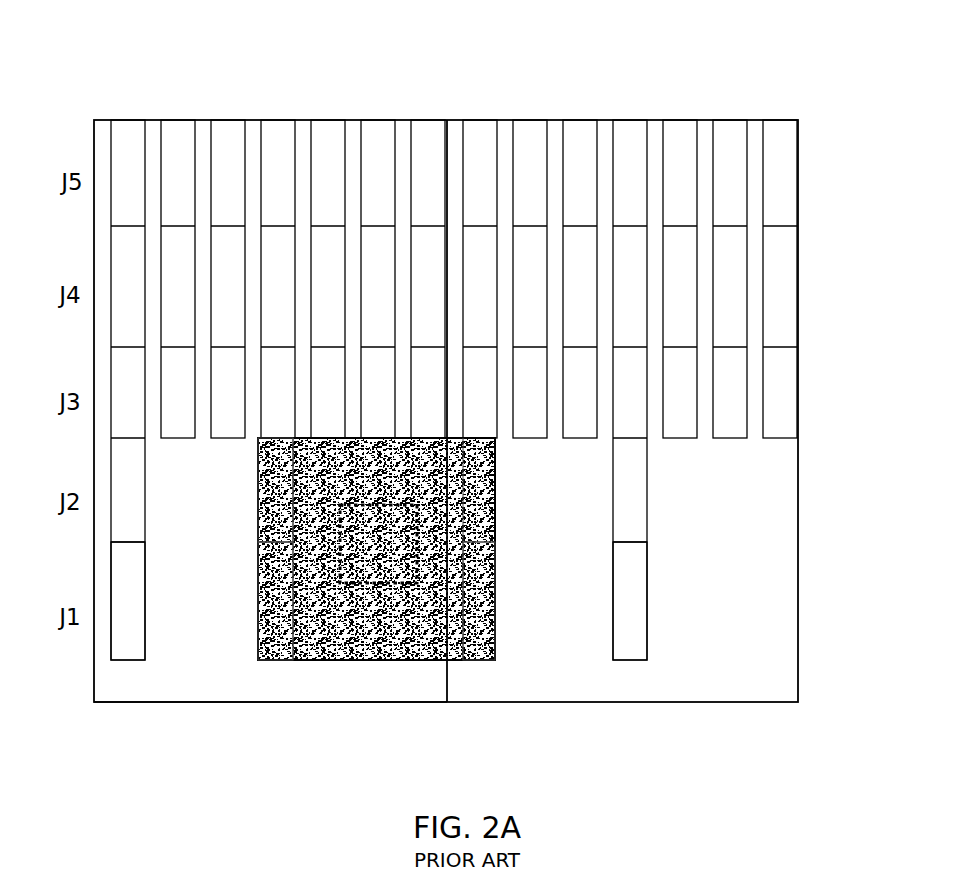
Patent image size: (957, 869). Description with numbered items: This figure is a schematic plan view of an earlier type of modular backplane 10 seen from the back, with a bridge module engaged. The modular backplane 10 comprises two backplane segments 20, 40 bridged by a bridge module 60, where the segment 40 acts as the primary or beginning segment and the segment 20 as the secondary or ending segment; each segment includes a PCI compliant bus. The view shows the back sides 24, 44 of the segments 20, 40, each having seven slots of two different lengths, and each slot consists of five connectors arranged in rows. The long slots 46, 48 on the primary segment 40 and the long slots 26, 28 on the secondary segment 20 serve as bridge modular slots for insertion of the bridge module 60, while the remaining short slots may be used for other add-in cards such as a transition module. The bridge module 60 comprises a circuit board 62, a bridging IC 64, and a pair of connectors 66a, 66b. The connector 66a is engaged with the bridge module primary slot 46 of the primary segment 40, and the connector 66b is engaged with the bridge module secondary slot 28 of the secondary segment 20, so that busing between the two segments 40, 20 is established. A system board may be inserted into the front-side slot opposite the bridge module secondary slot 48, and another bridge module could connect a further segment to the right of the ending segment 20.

The modular backplane 10 is at (445, 15).
The backplane segment 20 is at (627, 401).
The backplane segment 40 is at (93, 80).
The back side 24 is at (732, 677).
The long slot 26 is at (625, 649).
The long slot 28 is at (537, 656).
The back side 44 is at (230, 678).
The long slot 46 is at (231, 678).
The long slot 48 is at (130, 643).
The bridge module 60 is at (348, 672).
The circuit board 62 is at (313, 480).
The bridging IC 64 is at (403, 553).
The connector 66a is at (278, 640).
The connector 66b is at (478, 642).